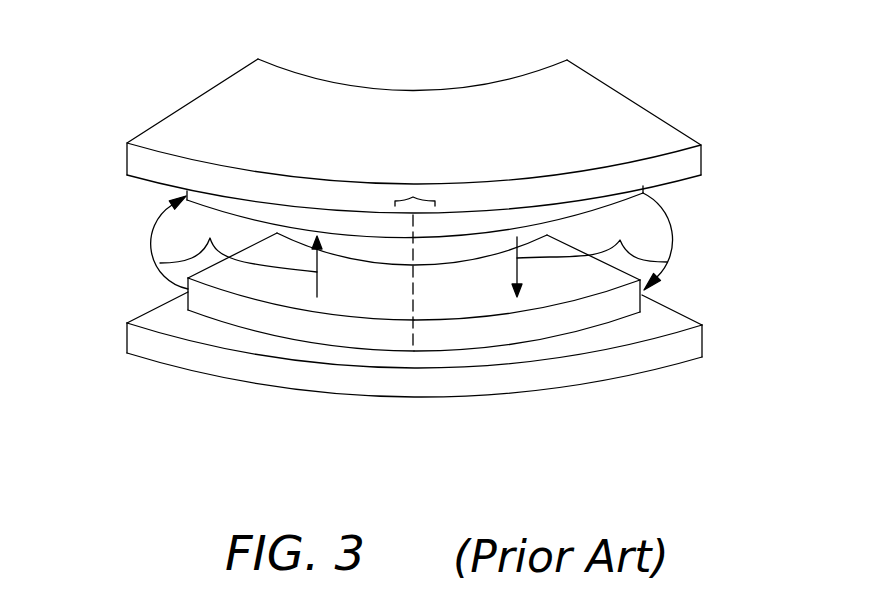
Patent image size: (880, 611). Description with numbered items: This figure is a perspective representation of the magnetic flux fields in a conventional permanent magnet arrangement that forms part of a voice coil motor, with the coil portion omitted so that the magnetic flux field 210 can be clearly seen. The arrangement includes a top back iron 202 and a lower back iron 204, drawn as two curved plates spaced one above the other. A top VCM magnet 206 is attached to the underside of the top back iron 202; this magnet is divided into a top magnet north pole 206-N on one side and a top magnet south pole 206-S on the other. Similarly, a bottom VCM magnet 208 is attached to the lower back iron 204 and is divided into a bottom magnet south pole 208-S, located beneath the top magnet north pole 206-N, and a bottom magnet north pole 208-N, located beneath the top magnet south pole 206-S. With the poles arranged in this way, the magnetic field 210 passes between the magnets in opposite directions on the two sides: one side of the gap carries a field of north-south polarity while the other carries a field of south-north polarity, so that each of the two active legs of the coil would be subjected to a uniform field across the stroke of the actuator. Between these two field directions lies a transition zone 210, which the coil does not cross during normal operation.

The top back iron 202 is at (607, 105).
The lower back iron 204 is at (677, 327).
The top VCM magnet 206 is at (590, 212).
The top magnet north pole 206-N is at (288, 217).
The top magnet south pole 206-S is at (470, 225).
The bottom VCM magnet 208 is at (443, 343).
The bottom magnet south pole 208-S is at (251, 314).
The bottom magnet north pole 208-N is at (592, 327).
The magnetic flux field 210 is at (412, 229).